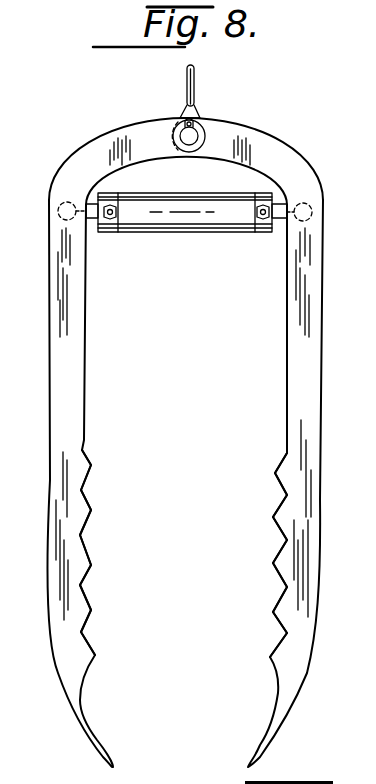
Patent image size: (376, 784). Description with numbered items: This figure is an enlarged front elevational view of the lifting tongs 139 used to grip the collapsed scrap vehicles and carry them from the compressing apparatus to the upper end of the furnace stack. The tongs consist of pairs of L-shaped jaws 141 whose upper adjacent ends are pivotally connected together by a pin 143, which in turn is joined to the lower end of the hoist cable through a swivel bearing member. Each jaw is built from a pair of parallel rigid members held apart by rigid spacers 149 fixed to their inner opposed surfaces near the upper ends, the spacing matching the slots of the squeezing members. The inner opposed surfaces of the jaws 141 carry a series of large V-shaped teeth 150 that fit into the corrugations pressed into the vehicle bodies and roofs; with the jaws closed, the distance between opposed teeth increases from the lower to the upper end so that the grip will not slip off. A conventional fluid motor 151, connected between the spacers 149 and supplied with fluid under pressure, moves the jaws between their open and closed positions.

The lifting tongs 139 is at (228, 118).
The L-shaped jaws 141 is at (75, 352).
The pin 143 is at (181, 126).
The rigid spacers 149 is at (66, 200).
The V-shaped teeth 150 is at (94, 467).
The fluid motor 151 is at (174, 206).